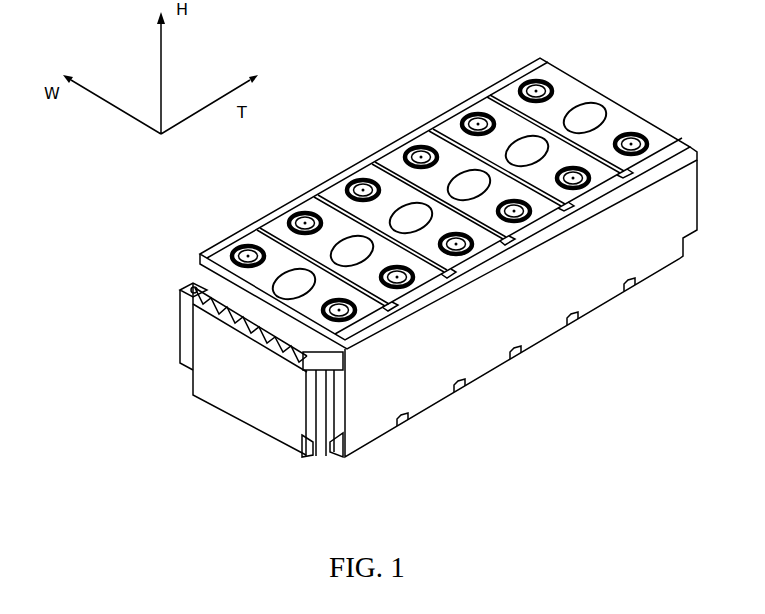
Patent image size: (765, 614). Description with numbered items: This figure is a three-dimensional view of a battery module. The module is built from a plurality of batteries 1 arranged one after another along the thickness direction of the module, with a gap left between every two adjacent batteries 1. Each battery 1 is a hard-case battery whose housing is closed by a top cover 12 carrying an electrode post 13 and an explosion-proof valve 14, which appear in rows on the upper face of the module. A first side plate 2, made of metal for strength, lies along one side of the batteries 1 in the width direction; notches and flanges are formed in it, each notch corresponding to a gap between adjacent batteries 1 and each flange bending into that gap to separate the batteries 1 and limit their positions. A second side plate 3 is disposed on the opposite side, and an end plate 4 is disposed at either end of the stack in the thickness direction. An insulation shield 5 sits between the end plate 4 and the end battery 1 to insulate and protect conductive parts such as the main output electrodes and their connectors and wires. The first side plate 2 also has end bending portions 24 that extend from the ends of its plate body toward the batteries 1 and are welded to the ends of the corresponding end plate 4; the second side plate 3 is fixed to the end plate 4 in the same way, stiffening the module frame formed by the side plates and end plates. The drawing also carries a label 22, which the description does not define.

The battery 1 is at (600, 87).
The first side plate 2 is at (452, 183).
The battery cell 22 is at (457, 108).
The top cover 12 is at (573, 93).
The electrode post 13 is at (543, 86).
The explosion-proof valve 14 is at (592, 112).
The second side plate 3 is at (612, 300).
The end plate 4 is at (238, 349).
The insulation shield 5 is at (203, 260).
The end bending portion 24 is at (181, 297).